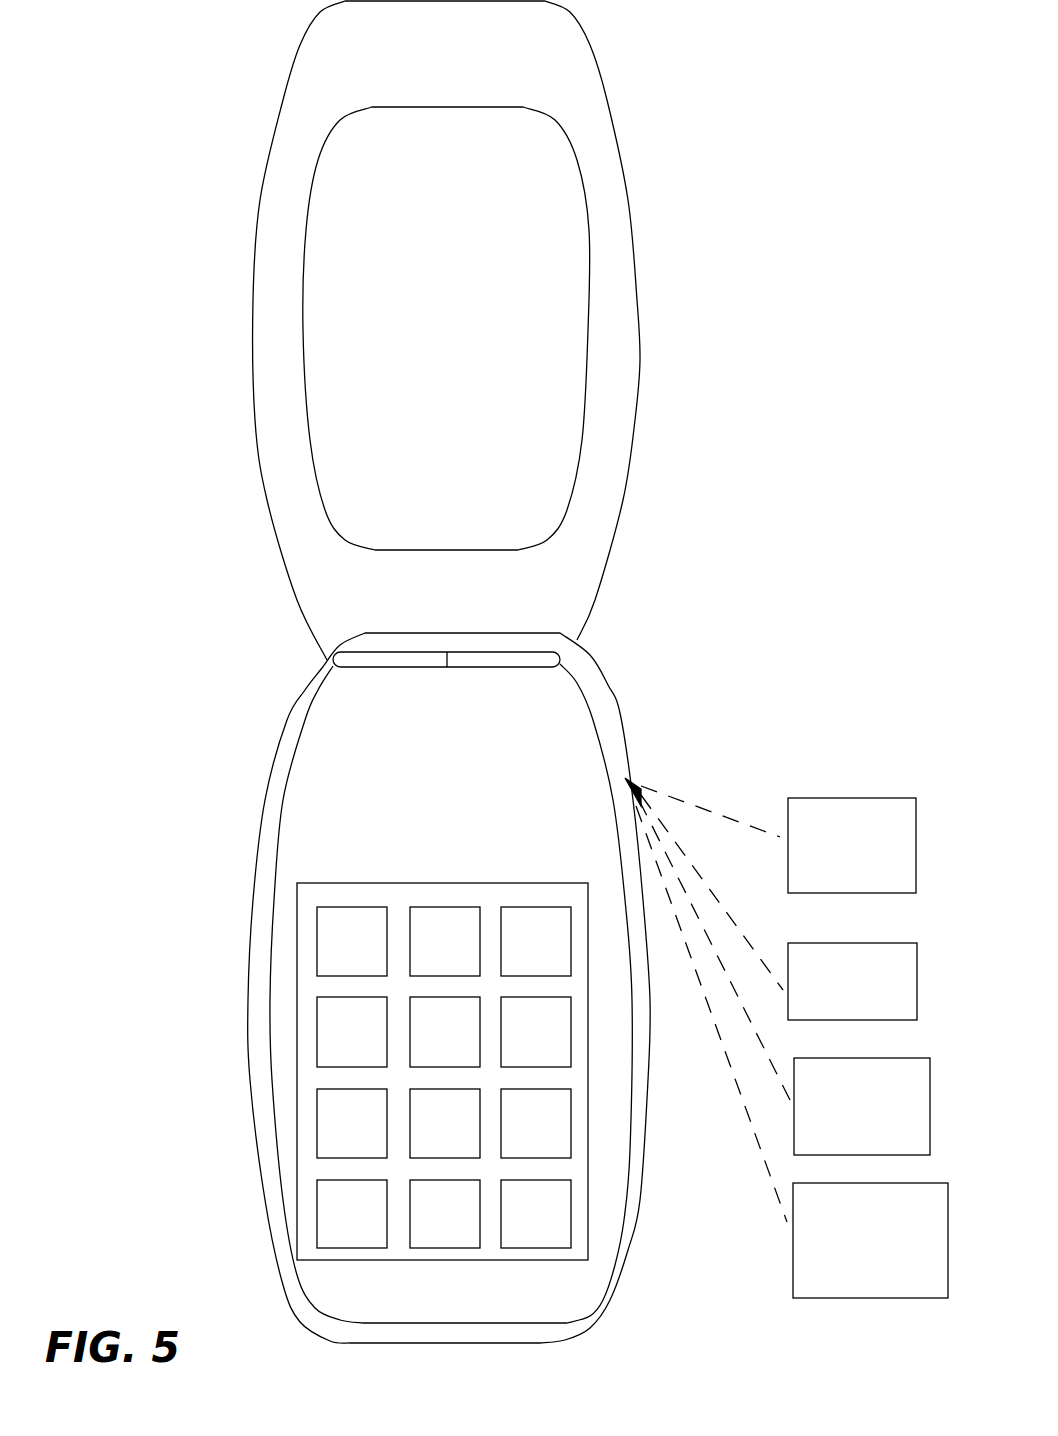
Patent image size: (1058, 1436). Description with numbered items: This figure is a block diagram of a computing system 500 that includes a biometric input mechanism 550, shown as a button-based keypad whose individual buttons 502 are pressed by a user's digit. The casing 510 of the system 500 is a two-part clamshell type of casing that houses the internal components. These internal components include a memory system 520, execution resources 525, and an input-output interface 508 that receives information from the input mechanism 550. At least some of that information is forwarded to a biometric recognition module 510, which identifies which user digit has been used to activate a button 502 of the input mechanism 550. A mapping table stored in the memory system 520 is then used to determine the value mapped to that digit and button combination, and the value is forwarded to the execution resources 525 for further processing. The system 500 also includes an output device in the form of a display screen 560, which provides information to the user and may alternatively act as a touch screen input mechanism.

The computing system 500 is at (210, 602).
The keys 502 is at (332, 953).
The input-output interface 508 is at (842, 1151).
The biometric recognition module 510 is at (932, 1288).
The memory system 520 is at (832, 1010).
The execution resources 525 is at (832, 890).
The biometric input mechanism 550 is at (482, 883).
The display screen 560 is at (427, 356).